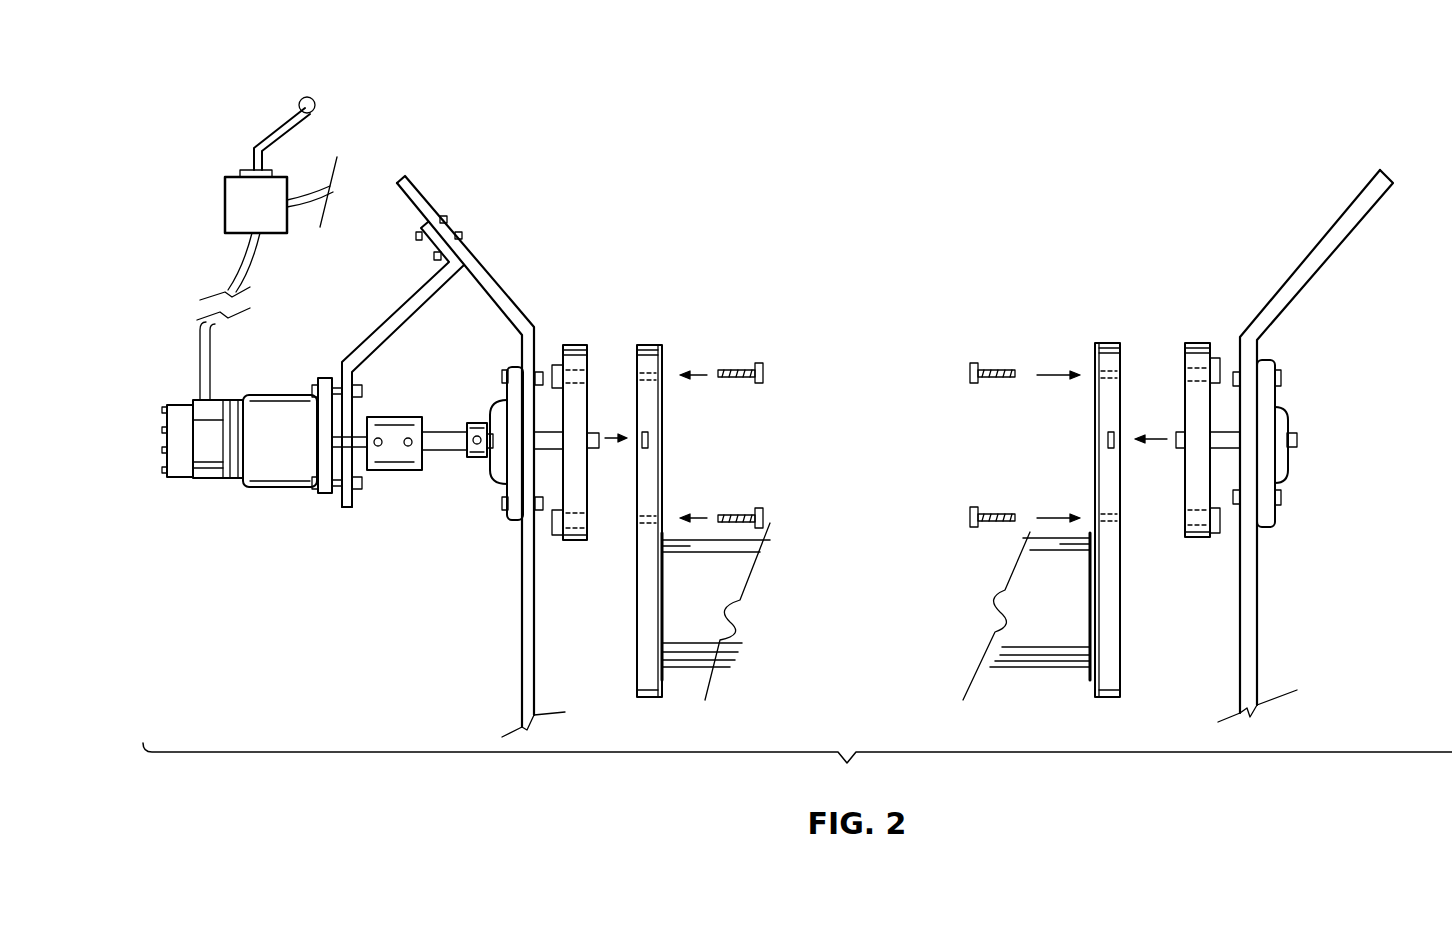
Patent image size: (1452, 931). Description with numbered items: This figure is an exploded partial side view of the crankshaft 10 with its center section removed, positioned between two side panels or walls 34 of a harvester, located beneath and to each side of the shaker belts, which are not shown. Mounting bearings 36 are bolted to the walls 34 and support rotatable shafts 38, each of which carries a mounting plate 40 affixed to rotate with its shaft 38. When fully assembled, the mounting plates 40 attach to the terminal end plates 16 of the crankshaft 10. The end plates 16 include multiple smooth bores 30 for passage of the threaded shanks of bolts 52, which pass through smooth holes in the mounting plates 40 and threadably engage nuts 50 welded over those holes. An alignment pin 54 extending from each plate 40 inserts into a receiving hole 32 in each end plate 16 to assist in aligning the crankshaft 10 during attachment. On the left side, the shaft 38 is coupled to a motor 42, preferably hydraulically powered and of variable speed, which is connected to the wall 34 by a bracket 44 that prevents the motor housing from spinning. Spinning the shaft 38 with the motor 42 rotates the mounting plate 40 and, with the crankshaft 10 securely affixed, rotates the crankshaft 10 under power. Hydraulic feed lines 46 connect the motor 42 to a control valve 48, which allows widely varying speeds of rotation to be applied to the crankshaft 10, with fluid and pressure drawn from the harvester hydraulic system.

The crankshaft 10 is at (1032, 595).
The terminal end plate 16 is at (660, 345).
The smooth bore 30 is at (662, 373).
The receiving hole 32 is at (648, 437).
The side panel 34 is at (420, 195).
The mounting bearing 36 is at (502, 513).
The rotatable shaft 38 is at (452, 445).
The mounting plate 40 is at (583, 347).
The motor 42 is at (250, 487).
The bracket 44 is at (400, 308).
The hydraulic feed line 46 is at (310, 180).
The control valve 48 is at (232, 182).
The nut 50 is at (558, 367).
The bolt 52 is at (760, 513).
The alignment pin 54 is at (600, 452).